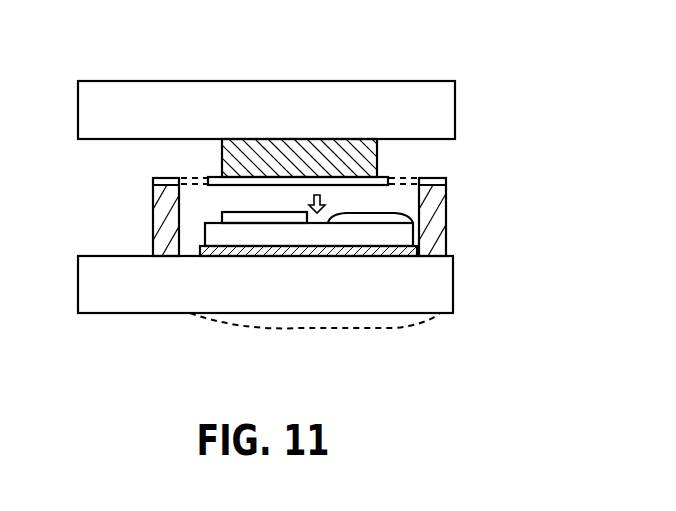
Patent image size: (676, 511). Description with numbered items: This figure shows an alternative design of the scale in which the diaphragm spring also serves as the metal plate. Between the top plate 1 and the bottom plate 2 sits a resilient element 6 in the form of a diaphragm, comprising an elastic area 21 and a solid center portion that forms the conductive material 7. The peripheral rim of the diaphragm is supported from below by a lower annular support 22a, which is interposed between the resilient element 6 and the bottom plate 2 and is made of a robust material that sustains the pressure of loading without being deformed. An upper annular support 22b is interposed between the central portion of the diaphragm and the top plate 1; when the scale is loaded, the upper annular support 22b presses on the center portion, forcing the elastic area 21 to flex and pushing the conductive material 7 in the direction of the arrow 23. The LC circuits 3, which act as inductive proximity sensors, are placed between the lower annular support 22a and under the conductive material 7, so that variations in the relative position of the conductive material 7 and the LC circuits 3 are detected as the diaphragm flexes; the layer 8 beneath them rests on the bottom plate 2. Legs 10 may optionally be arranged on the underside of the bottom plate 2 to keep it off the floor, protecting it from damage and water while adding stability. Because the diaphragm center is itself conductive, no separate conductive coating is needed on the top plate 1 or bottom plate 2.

The top plate 1 is at (462, 96).
The bottom plate 2 is at (462, 308).
The LC circuits 3 is at (307, 237).
The resilient element 6 is at (402, 164).
The conductive material 7 is at (307, 180).
The adhesive layer 8 is at (217, 250).
The legs 10 is at (410, 322).
The elastic area 21 is at (185, 178).
The lower annular support 22a is at (163, 226).
The upper annular support 22b is at (252, 150).
The arrow 23 is at (318, 216).